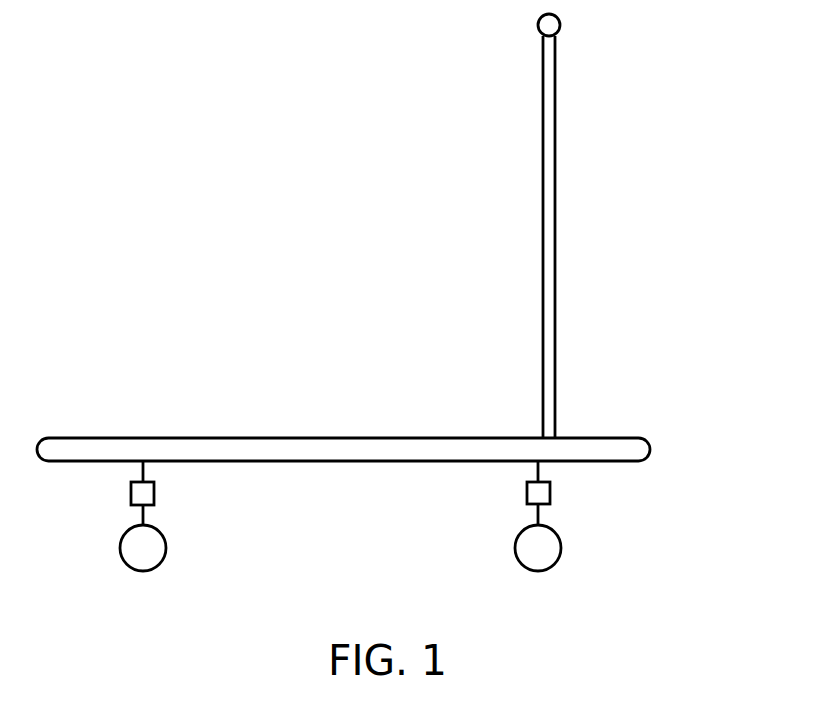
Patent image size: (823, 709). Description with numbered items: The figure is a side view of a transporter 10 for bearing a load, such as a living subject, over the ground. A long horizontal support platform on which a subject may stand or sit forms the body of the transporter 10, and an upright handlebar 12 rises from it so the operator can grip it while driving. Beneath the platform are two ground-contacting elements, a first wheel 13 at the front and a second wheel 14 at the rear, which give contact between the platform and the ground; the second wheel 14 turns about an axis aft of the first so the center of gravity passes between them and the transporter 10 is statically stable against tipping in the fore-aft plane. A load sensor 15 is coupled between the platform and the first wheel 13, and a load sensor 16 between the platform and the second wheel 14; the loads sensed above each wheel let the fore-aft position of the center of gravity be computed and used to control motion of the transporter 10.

The transporter 10 is at (708, 371).
The handlebar 12 is at (556, 100).
The first wheel 13 is at (121, 548).
The second wheel 14 is at (562, 550).
The load sensor 15 is at (155, 487).
The load sensor 16 is at (526, 487).